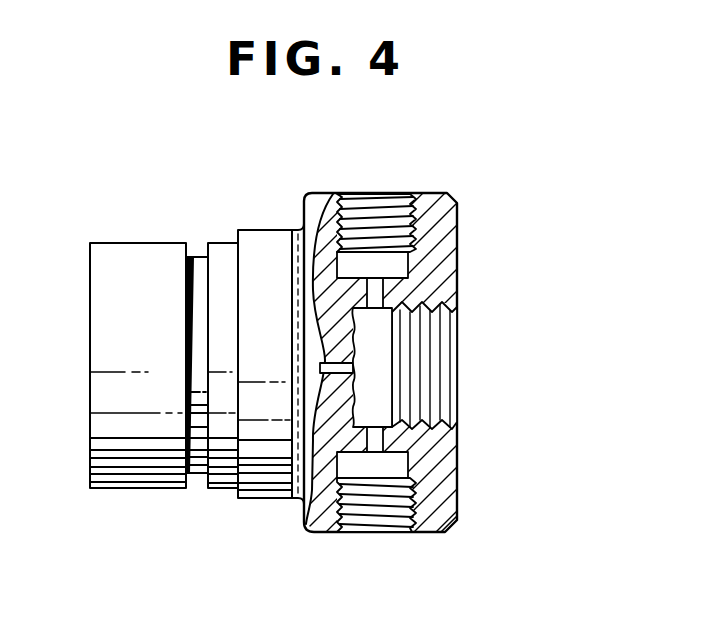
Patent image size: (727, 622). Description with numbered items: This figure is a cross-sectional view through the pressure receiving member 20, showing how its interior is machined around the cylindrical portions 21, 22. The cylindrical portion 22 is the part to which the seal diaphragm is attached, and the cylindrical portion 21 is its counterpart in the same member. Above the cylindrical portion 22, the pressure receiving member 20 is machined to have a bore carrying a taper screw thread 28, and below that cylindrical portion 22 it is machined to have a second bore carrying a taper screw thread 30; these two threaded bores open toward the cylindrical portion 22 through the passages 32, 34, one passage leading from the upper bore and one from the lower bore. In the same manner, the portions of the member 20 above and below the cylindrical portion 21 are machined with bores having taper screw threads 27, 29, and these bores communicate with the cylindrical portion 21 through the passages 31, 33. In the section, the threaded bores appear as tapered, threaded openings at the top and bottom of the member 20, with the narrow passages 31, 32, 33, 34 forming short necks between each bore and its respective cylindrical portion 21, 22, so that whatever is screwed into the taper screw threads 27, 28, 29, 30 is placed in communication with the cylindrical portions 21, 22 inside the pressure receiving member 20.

The pressure receiving member 20 is at (462, 218).
The cylindrical portion 21 is at (479, 365).
The cylindrical portion 22 is at (442, 372).
The taper screw thread 27 is at (423, 200).
The taper screw thread 28 is at (418, 213).
The taper screw thread 29 is at (419, 528).
The taper screw thread 30 is at (423, 502).
The passage 31 is at (475, 293).
The passage 32 is at (387, 293).
The passage 33 is at (474, 469).
The passage 34 is at (400, 448).